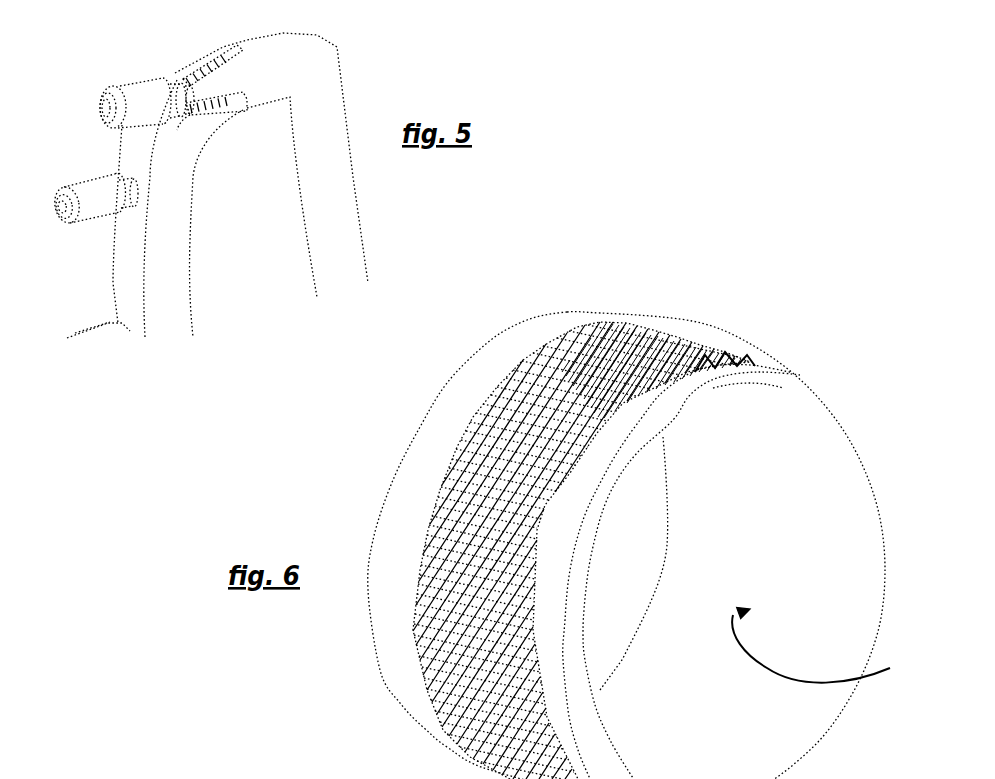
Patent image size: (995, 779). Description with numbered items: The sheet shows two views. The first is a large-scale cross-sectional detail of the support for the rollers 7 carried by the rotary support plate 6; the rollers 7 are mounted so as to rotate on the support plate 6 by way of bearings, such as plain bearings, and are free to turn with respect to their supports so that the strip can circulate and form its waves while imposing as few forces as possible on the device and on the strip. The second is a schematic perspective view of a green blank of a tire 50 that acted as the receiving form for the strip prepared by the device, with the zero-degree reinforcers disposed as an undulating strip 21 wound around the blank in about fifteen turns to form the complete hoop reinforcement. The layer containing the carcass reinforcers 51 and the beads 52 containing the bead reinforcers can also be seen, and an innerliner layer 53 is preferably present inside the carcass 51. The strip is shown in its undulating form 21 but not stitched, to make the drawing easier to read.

In FIG. 5, the rotary support plate 6 is at (132, 153).
In FIG. 5, the rollers 7 is at (197, 68).
In FIG. 6, the undulating strip 21 is at (735, 358).
In FIG. 6, the tire 50 is at (874, 386).
In FIG. 6, the carcass reinforcers 51 is at (592, 478).
In FIG. 6, the beads 52 is at (712, 385).
In FIG. 6, the innerliner layer 53 is at (828, 644).